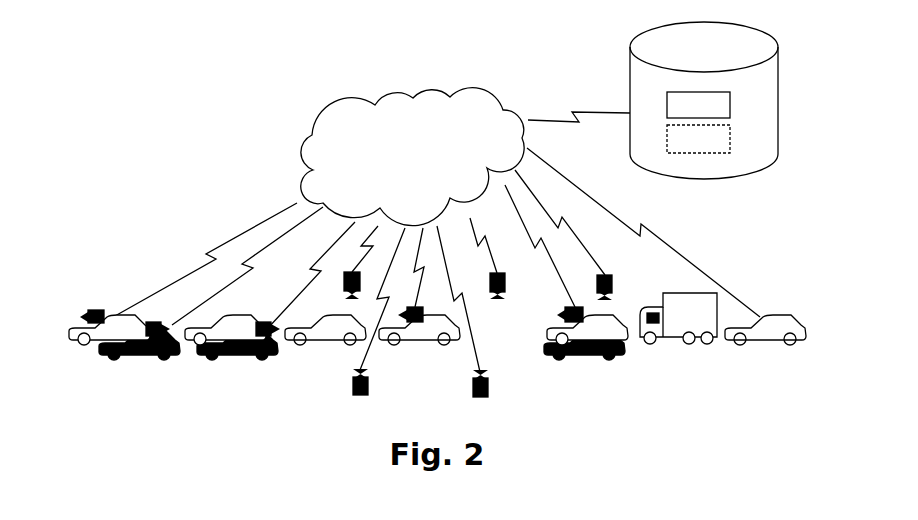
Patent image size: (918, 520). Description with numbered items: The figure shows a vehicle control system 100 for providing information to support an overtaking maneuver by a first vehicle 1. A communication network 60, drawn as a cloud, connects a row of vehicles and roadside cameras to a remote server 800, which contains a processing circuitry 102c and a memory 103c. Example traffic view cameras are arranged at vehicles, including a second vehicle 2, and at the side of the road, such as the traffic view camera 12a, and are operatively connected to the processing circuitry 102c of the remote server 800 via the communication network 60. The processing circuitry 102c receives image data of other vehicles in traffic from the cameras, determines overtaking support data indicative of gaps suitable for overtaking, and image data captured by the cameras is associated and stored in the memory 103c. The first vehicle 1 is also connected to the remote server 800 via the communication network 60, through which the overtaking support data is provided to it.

The vehicle control system 100 is at (172, 77).
The communication network 60 is at (412, 157).
The remote server 800 is at (704, 100).
The processing circuitry 102c is at (698, 105).
The memory 103c is at (698, 139).
The second vehicle 2 is at (121, 303).
The first vehicle 1 is at (758, 302).
The traffic view camera 12a is at (338, 386).